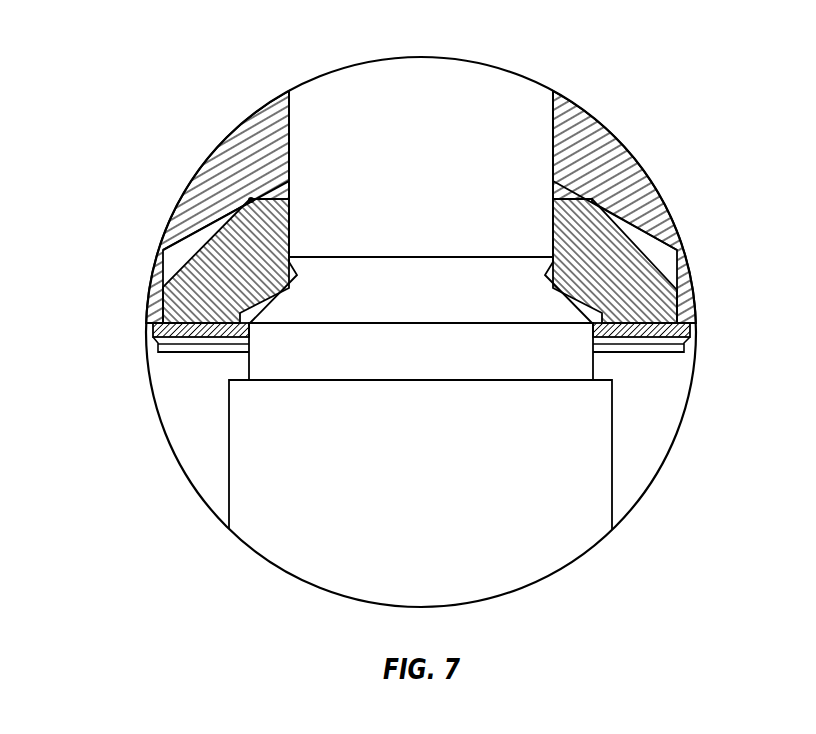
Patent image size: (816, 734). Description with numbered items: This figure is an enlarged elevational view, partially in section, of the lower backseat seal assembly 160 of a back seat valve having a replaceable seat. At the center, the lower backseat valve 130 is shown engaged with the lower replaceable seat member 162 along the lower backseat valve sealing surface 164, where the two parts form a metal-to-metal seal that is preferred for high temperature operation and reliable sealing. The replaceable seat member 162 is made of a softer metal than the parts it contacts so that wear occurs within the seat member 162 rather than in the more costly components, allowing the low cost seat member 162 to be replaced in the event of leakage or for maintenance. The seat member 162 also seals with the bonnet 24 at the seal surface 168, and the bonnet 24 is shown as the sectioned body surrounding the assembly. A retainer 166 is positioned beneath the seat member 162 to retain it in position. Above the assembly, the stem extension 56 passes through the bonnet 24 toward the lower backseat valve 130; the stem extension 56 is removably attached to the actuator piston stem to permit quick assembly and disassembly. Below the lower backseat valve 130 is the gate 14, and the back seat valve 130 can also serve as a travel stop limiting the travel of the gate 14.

The lower backseat seal assembly 160 is at (134, 496).
The bonnet 24 is at (421, 207).
The lower replaceable seat member 162 is at (457, 261).
The seal surface 168 is at (411, 195).
The stem extension 56 is at (435, 153).
The lower backseat valve sealing surface 164 is at (421, 290).
The retainer 166 is at (389, 366).
The lower backseat valve 130 is at (420, 369).
The gate 14 is at (448, 477).